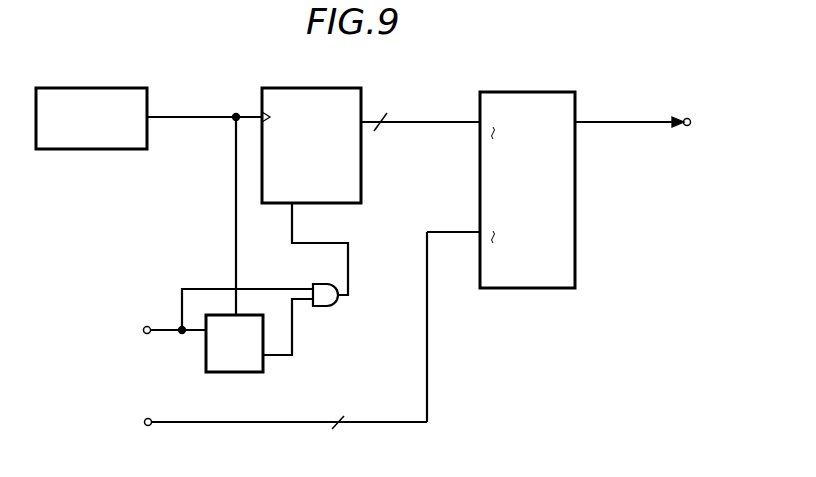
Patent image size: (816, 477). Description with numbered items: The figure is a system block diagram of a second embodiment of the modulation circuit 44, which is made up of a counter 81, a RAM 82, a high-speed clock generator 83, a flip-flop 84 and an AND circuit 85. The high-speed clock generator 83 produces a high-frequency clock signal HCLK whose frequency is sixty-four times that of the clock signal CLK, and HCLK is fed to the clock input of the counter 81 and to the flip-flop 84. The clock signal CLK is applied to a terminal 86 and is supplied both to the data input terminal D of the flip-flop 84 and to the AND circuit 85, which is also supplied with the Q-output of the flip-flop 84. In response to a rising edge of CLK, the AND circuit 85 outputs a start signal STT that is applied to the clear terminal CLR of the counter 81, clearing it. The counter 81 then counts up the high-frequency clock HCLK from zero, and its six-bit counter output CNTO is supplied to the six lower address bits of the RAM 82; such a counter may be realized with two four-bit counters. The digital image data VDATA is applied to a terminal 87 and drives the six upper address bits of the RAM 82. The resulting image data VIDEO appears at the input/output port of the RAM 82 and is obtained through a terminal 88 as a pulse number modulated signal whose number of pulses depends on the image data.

The modulation circuit 44 is at (489, 49).
The counter 81 is at (361, 175).
The RAM 82 is at (567, 205).
The high-speed clock generator 83 is at (145, 88).
The flip-flop 84 is at (245, 372).
The AND circuit 85 is at (330, 306).
The terminal 86 is at (149, 334).
The terminal 87 is at (150, 426).
The terminal 88 is at (686, 126).